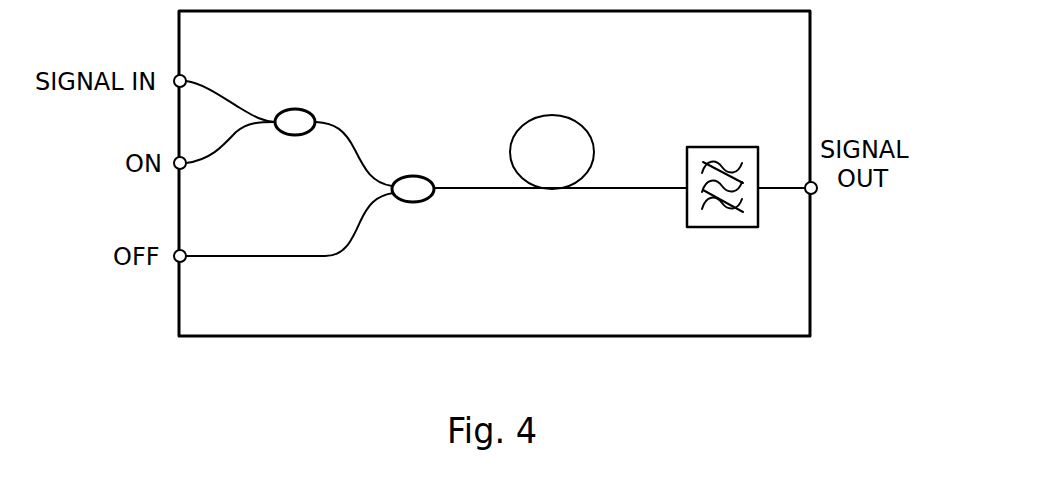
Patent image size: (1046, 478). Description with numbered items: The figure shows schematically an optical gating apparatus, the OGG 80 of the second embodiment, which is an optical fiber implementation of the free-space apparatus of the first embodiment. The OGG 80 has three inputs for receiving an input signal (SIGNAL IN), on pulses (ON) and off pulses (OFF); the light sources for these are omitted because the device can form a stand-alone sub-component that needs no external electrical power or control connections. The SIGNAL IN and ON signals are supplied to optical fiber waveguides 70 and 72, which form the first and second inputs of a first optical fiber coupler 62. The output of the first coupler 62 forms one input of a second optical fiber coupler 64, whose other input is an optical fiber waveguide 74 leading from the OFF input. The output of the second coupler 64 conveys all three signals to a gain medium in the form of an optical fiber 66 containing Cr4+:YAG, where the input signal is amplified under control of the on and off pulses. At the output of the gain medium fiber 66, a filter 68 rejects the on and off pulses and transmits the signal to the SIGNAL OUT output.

The first optical fiber coupler 62 is at (304, 108).
The second optical fiber coupler 64 is at (410, 174).
The gain medium optical fiber 66 is at (567, 115).
The filter 68 is at (718, 147).
The optical fiber waveguide 70 is at (224, 93).
The optical fiber waveguide 72 is at (234, 139).
The optical fiber waveguide 74 is at (298, 255).
The OGG 80 is at (719, 350).